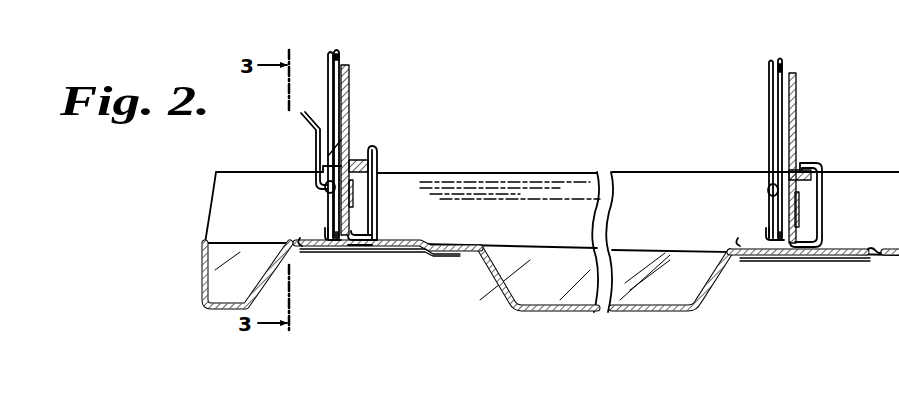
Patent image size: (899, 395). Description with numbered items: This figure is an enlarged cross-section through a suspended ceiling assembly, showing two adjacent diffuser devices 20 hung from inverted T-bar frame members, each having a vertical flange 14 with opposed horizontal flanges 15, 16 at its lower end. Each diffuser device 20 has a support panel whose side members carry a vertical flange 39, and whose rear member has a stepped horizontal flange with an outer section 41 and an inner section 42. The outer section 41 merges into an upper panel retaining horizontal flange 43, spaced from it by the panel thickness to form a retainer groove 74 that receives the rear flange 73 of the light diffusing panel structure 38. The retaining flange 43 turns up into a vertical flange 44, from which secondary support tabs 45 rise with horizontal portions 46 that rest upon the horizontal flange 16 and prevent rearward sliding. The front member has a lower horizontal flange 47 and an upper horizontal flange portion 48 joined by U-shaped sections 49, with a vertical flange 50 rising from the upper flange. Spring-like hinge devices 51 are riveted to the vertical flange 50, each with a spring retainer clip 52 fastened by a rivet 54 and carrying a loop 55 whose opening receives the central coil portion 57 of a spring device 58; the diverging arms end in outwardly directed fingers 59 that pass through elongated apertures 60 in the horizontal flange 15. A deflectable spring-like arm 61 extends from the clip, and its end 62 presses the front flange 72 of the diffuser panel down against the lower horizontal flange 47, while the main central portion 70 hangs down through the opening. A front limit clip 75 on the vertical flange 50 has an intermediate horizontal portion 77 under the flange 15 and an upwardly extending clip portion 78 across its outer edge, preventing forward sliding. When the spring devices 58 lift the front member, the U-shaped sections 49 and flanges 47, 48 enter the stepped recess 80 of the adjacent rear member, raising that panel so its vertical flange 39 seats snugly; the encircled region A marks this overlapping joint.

The vertical flange 14 is at (349, 102).
The horizontal flange 15 is at (298, 155).
The horizontal flange 16 is at (374, 160).
The diffuser device 20 is at (220, 308).
The light diffusing panel structure 38 is at (656, 312).
The vertical flange 39 is at (247, 230).
The outer section 41 is at (395, 239).
The inner section 42 is at (462, 257).
The panel retaining horizontal flange 43 is at (350, 237).
The vertical flange 44 is at (379, 201).
The secondary support tab 45 is at (376, 166).
The horizontal portion 46 is at (376, 152).
The lower horizontal flange 47 is at (765, 259).
The upper horizontal flange portion 48 is at (806, 261).
The U-shaped section 49 is at (872, 259).
The vertical flange 50 is at (810, 182).
The spring-like hinge device 51 is at (332, 248).
The spring retainer clip 52 is at (355, 185).
The rivet 54 is at (352, 215).
The loop 55 is at (326, 195).
The central coil portion 57 is at (339, 245).
The spring device 58 is at (333, 92).
The finger 59 is at (339, 61).
The aperture 60 is at (343, 142).
The deflectable spring-like arm 61 is at (325, 248).
The end of spring arm 62 is at (298, 237).
The main central portion 70 is at (514, 310).
The front flange 72 is at (741, 260).
The rear flange 73 is at (426, 242).
The retainer groove 74 is at (376, 251).
The front limit clip 75 is at (312, 153).
The intermediate horizontal portion 77 is at (322, 183).
The upwardly extending clip portion 78 is at (302, 135).
The stepped recess 80 is at (427, 257).
The detail A is at (709, 291).